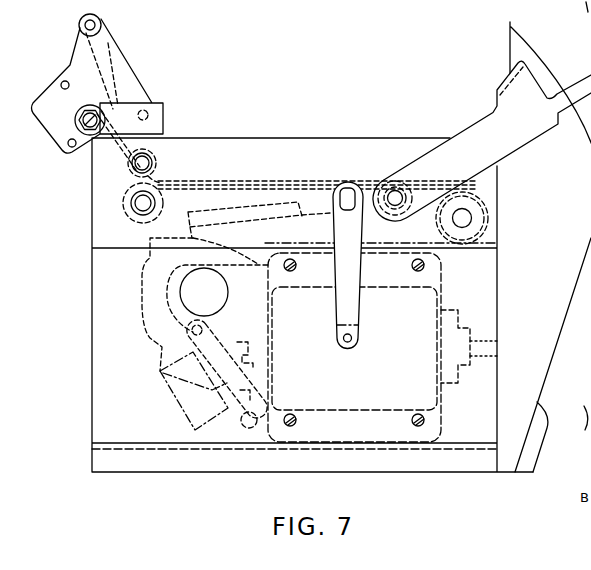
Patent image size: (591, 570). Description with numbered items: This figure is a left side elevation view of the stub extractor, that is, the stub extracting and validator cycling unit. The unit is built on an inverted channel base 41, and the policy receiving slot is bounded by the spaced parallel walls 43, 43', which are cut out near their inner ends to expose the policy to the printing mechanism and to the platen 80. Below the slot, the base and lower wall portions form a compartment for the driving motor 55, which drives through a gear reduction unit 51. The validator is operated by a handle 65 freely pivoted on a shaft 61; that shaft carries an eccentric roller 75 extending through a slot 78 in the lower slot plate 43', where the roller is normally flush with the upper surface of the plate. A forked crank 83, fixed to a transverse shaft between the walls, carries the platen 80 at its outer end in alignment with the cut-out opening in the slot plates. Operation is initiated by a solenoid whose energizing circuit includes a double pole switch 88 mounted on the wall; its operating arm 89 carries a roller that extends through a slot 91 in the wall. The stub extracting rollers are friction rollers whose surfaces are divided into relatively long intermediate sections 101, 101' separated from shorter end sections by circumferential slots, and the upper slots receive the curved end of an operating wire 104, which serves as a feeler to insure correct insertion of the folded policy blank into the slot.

The inverted channel base 41 is at (378, 466).
The slot wall 43 is at (318, 168).
The lower slot plate 43' is at (243, 212).
The gear reduction unit 51 is at (145, 303).
The driving motor 55 is at (398, 381).
The shaft 61 is at (402, 195).
The handle 65 is at (522, 133).
The eccentric roller 75 is at (380, 218).
The slot 78 is at (373, 183).
The platen 80 is at (250, 213).
The forked crank 83 is at (430, 235).
The double pole switch 88 is at (190, 396).
The operating arm 89 is at (253, 367).
The slot 91 is at (250, 428).
The intermediate friction section 101 is at (172, 185).
The intermediate friction section 101' is at (184, 144).
The operating wire 104 is at (99, 150).